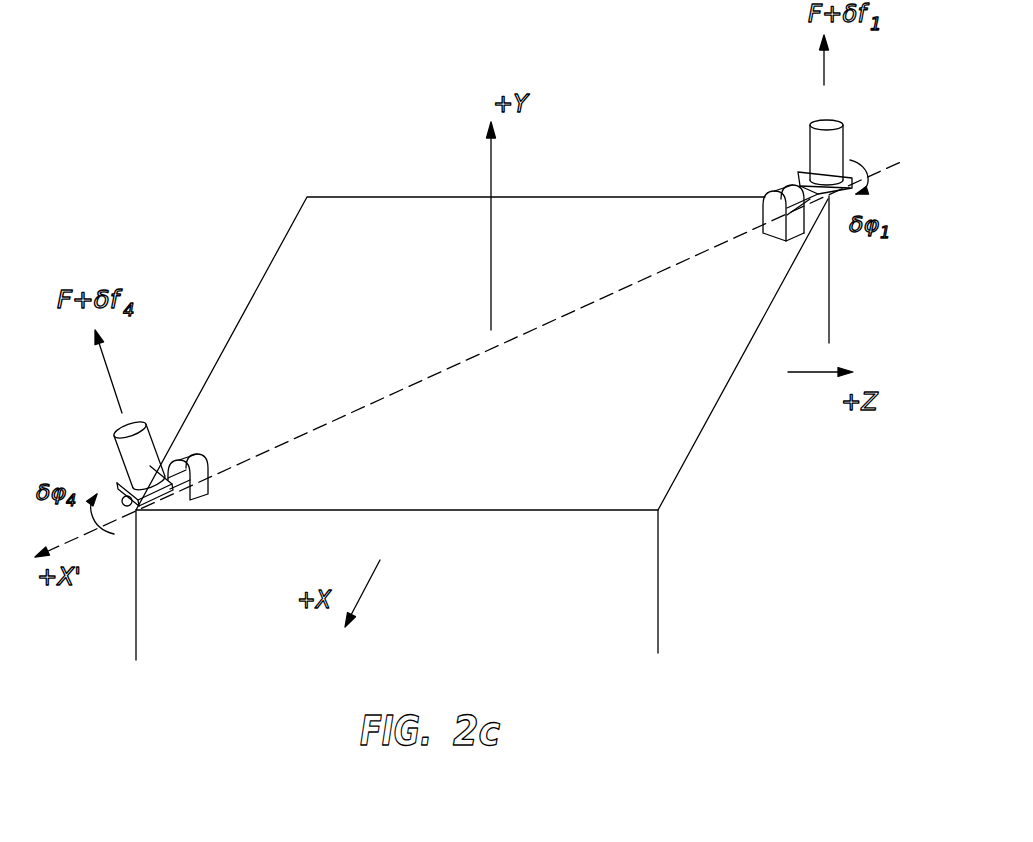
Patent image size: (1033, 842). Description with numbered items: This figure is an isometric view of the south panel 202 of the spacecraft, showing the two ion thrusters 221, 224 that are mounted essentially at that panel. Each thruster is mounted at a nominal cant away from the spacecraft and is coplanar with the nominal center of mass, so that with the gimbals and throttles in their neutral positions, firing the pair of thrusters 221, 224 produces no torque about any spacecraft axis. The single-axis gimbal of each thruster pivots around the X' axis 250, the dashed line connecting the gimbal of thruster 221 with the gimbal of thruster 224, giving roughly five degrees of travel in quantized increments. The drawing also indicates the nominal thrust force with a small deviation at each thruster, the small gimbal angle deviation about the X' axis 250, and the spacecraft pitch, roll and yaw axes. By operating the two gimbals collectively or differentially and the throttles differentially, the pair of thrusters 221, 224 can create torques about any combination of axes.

The south panel 202 is at (390, 206).
The thruster 221 is at (808, 142).
The thruster 224 is at (118, 455).
The X' axis 250 is at (430, 377).